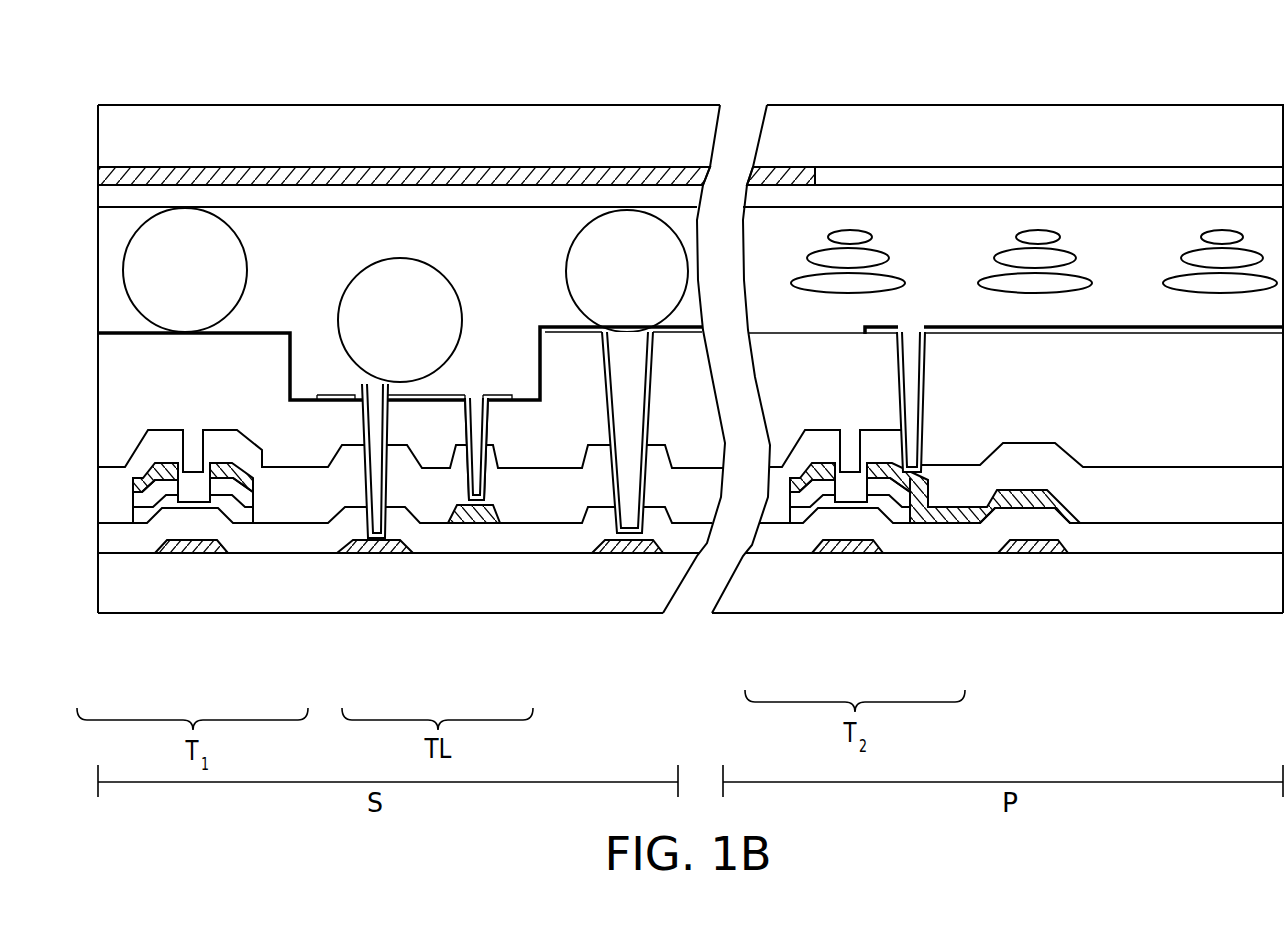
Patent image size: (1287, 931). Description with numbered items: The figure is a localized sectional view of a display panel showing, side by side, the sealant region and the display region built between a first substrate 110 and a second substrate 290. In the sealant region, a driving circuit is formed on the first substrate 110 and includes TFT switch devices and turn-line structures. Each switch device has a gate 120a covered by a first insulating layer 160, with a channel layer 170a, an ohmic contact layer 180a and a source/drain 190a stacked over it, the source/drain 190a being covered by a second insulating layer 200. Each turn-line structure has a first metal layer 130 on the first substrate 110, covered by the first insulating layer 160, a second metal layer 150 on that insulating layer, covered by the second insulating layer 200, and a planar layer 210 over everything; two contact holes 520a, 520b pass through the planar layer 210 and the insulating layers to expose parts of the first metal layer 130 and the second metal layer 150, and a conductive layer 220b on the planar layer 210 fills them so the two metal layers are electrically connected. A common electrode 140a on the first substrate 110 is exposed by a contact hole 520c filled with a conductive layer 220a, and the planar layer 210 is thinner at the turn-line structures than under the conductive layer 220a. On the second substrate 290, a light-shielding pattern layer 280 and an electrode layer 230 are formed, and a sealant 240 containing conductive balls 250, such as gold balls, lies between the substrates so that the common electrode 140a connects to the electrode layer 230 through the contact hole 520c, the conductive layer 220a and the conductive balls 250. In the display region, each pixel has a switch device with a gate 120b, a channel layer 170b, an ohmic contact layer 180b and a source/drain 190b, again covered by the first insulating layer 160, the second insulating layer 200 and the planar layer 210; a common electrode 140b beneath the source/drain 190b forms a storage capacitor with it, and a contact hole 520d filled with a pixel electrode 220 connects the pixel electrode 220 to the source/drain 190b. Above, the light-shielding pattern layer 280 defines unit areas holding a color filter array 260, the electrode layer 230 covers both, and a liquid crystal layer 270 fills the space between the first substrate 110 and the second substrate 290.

The first substrate 110 is at (558, 577).
The gate 120a is at (192, 547).
The gate 120b is at (852, 547).
The first metal layer 130 is at (364, 545).
The common electrode 140a is at (630, 543).
The common electrode 140b is at (1033, 547).
The second metal layer 150 is at (482, 513).
The first insulating layer 160 is at (305, 535).
The channel layer 170a is at (143, 517).
The channel layer 170b is at (793, 517).
The ohmic contact layer 180a is at (228, 490).
The ohmic contact layer 180b is at (900, 497).
The source/drain 190a is at (253, 487).
The source/drain 190b is at (935, 513).
The second insulating layer 200 is at (430, 498).
The planar layer 210 is at (552, 437).
The pixel electrode 220 is at (1133, 335).
The conductive layer 220a is at (560, 328).
The conductive layer 220b is at (405, 402).
The electrode layer 230 is at (445, 195).
The sealant 240 is at (260, 223).
The conductive balls 250 is at (180, 225).
The color filter array 260 is at (1003, 175).
The liquid crystal layer 270 is at (847, 255).
The light-shielding pattern layer 280 is at (538, 180).
The second substrate 290 is at (597, 133).
The contact hole 520a is at (357, 382).
The contact hole 520b is at (460, 413).
The contact hole 520c is at (648, 365).
The contact hole 520d is at (905, 350).